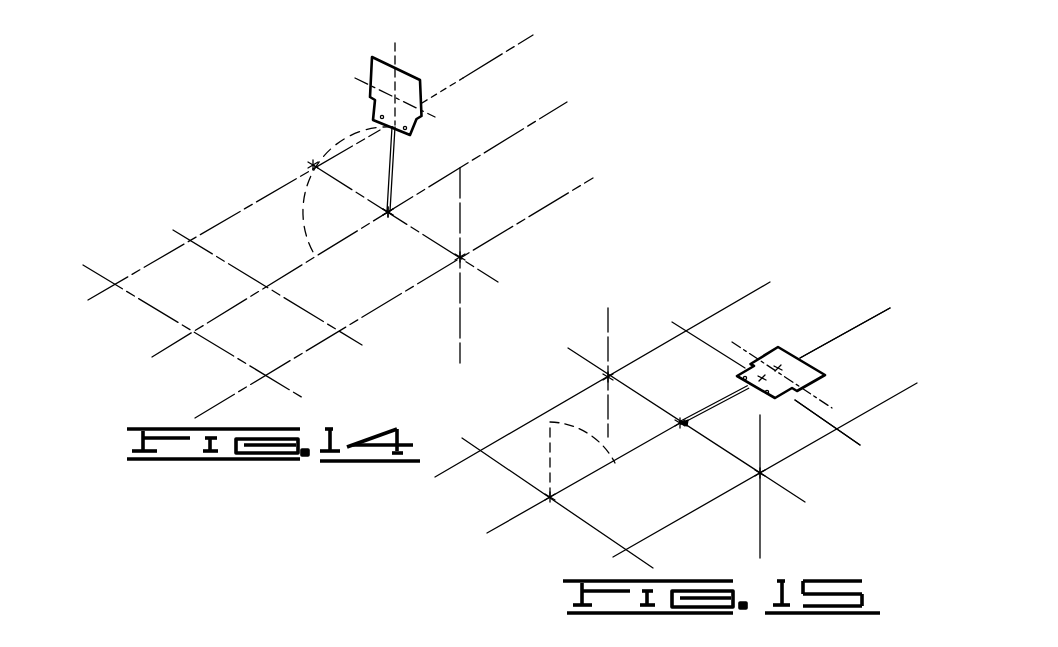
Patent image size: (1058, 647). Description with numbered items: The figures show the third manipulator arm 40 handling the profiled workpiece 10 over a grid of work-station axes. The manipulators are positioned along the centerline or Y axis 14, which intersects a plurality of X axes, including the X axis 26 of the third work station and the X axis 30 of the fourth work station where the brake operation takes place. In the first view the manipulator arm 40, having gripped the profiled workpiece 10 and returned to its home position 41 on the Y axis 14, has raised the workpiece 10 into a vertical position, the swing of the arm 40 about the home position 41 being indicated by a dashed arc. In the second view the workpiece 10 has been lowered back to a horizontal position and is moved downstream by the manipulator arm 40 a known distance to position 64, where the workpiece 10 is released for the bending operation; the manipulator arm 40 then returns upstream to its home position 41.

In FIG. 14, the profiled workpiece 10 is at (410, 83).
In FIG. 15, the profiled workpiece 10 is at (814, 366).
In FIG. 15, the centerline or Y axis 14 is at (857, 325).
In FIG. 14, the X axis of the third work station 26 is at (233, 353).
In FIG. 15, the X axis of the fourth work station 30 is at (856, 441).
In FIG. 14, the third manipulator arm 40 is at (394, 171).
In FIG. 15, the third manipulator arm 40 is at (712, 408).
In FIG. 14, the home position 41 is at (389, 216).
In FIG. 15, the home position 41 is at (556, 498).
In FIG. 15, the downstream position 64 is at (638, 395).